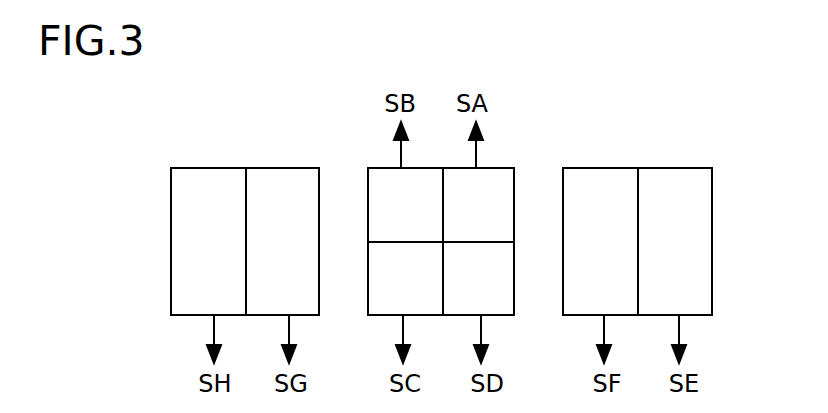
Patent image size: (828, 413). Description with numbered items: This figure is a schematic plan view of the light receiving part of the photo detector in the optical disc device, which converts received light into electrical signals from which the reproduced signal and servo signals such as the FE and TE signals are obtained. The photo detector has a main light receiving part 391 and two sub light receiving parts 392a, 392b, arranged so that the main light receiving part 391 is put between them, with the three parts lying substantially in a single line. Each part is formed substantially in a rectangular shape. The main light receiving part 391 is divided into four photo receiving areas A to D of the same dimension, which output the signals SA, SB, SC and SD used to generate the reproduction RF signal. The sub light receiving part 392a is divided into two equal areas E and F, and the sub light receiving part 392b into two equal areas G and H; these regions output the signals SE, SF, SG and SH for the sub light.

The main light receiving part 391 is at (503, 168).
The sub light receiving part 392a is at (618, 168).
The sub light receiving part 392b is at (228, 168).